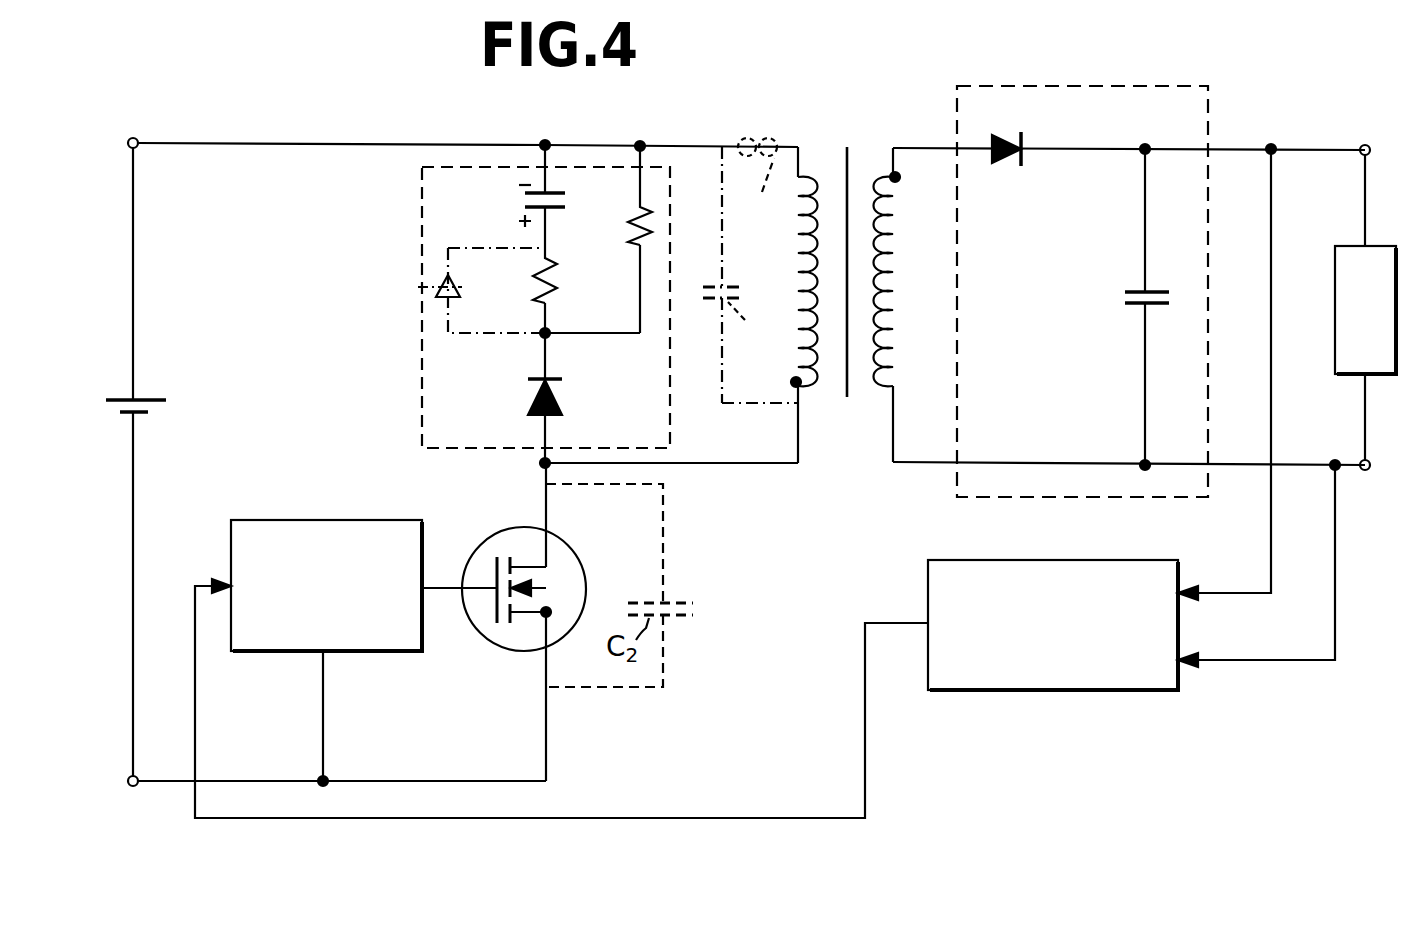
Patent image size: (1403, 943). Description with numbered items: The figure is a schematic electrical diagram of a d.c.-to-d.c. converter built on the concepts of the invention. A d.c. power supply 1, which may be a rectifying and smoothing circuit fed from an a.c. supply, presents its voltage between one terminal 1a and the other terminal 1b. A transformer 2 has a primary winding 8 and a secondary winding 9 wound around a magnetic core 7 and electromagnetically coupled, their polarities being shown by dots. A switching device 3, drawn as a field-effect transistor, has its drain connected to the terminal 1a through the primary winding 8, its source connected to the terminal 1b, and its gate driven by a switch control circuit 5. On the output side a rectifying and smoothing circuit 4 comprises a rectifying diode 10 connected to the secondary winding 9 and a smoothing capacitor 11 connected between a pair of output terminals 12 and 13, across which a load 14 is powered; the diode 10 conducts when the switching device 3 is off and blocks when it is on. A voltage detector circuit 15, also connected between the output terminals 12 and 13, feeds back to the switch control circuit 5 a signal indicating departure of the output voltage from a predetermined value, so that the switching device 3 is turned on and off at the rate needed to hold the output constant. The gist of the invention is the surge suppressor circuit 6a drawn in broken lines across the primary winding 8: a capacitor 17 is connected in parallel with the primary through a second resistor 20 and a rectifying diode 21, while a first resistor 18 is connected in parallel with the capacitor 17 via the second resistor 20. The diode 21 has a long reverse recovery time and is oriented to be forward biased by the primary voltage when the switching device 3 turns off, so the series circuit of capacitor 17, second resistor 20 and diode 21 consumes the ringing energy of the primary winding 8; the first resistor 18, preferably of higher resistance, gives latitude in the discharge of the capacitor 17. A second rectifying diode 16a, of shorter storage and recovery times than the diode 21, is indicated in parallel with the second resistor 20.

The terminal 1a is at (133, 138).
The terminal 1b is at (134, 787).
The d.c. power supply 1 is at (141, 396).
The transformer 2 is at (823, 271).
The switching device 3 is at (588, 585).
The rectifying and smoothing circuit 4 is at (1209, 120).
The switch control circuit 5 is at (313, 520).
The surge suppressor circuit 6a is at (422, 210).
The magnetic core 7 is at (848, 395).
The primary winding 8 is at (790, 255).
The secondary winding 9 is at (900, 210).
The rectifying diode 10 is at (1005, 165).
The smoothing capacitor 11 is at (1135, 285).
The output terminal 12 is at (1365, 144).
The output terminal 13 is at (1366, 471).
The load 14 is at (1346, 244).
The voltage detector circuit 15 is at (928, 593).
The second rectifying diode 16a is at (424, 290).
The capacitor 17 is at (527, 212).
The first resistor 18 is at (630, 214).
The second resistor 20 is at (530, 283).
The rectifying diode 21 is at (528, 397).